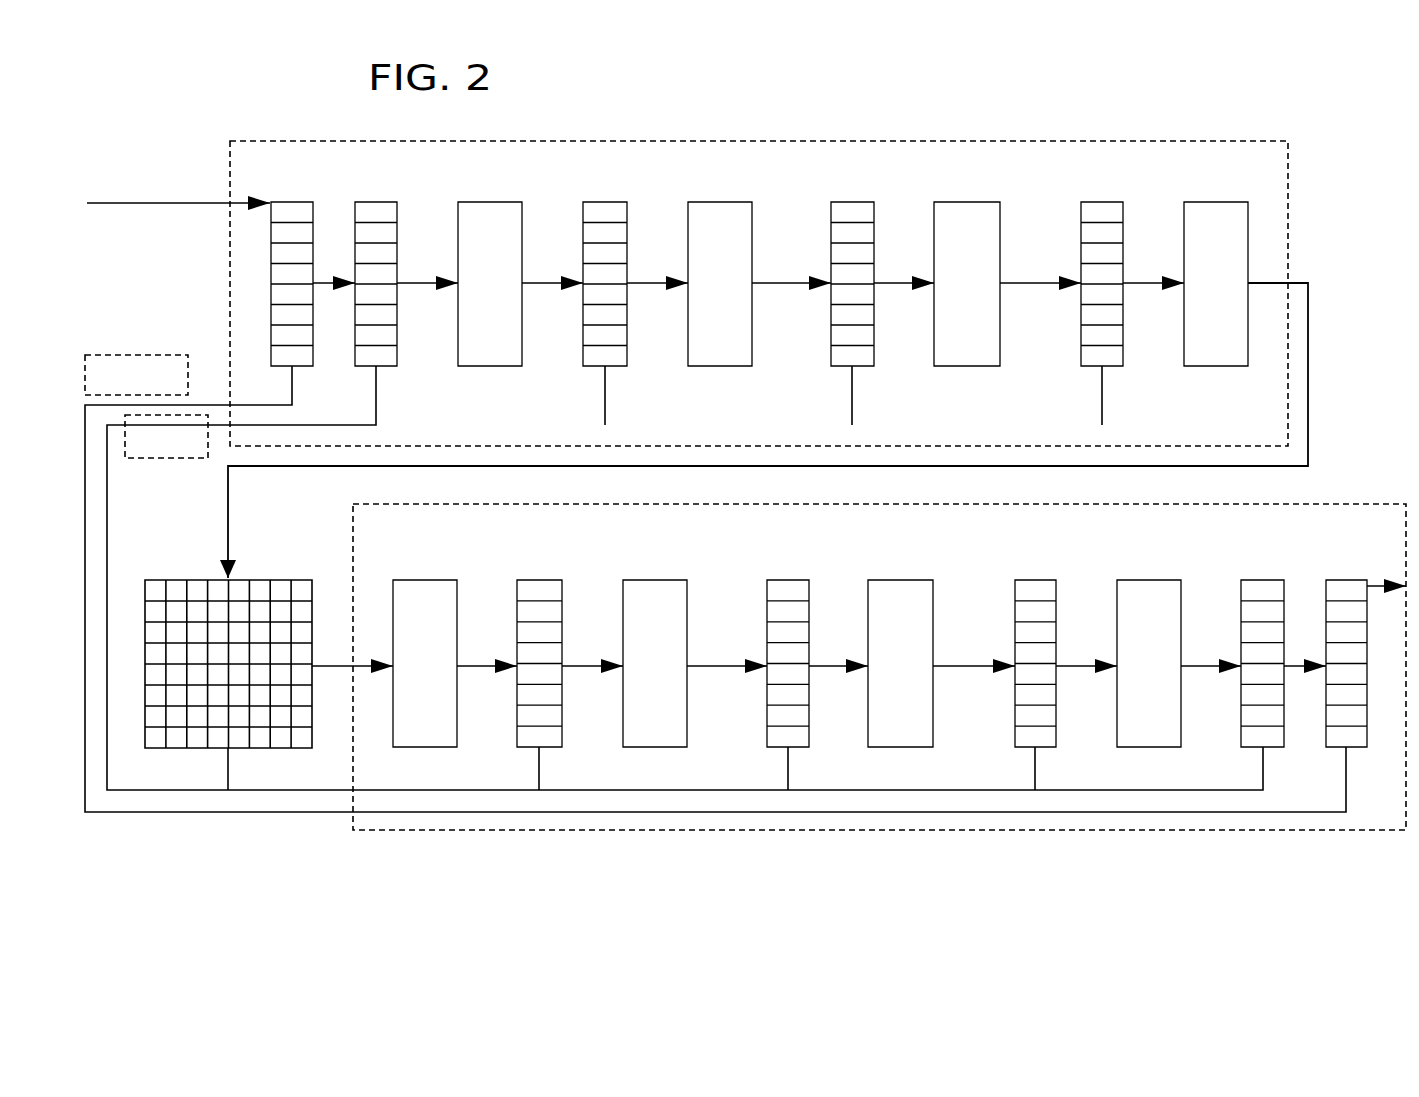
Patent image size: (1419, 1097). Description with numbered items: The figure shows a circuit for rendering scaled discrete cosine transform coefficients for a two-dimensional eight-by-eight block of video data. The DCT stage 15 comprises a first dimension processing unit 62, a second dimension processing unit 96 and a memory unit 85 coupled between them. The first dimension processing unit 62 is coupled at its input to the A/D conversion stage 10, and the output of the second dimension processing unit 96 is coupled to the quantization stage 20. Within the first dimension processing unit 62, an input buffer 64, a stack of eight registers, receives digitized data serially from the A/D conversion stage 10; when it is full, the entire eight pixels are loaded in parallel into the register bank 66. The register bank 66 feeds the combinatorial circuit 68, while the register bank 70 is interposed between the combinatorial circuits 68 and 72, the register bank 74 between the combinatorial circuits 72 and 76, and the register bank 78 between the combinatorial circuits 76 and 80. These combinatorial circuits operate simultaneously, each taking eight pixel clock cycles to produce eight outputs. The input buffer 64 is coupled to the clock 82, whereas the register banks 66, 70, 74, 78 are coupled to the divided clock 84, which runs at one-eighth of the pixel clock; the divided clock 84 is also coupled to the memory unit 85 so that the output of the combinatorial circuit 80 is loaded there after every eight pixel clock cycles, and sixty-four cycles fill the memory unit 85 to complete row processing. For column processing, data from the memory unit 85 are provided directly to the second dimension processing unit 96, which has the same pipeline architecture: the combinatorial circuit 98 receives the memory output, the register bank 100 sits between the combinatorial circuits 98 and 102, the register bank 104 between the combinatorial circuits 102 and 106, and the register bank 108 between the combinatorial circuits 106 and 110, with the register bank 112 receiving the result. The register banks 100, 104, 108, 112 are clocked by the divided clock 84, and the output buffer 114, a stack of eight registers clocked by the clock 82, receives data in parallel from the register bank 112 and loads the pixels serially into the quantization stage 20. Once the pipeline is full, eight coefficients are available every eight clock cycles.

The A/D conversion stage 10 is at (174, 137).
The DCT stage 15 is at (1186, 65).
The quantization stage 20 is at (1369, 470).
The first dimension processing unit 62 is at (1178, 141).
The input buffer 64 is at (300, 366).
The register bank 66 is at (385, 366).
The combinatorial circuit 68 is at (481, 202).
The register bank 70 is at (612, 366).
The combinatorial circuit 72 is at (714, 202).
The register bank 74 is at (861, 366).
The combinatorial circuit 76 is at (976, 202).
The register bank 78 is at (1110, 366).
The combinatorial circuit 80 is at (1224, 202).
The clock 82 is at (125, 355).
The 1/n clock 84 is at (142, 458).
The memory unit 85 is at (188, 580).
The second dimension processing unit 96 is at (1258, 830).
The combinatorial circuit 98 is at (418, 580).
The register bank 100 is at (548, 747).
The combinatorial circuit 102 is at (648, 580).
The register bank 104 is at (794, 747).
The combinatorial circuit 106 is at (893, 580).
The register bank 108 is at (1044, 747).
The combinatorial circuit 110 is at (1122, 580).
The register bank 112 is at (1270, 747).
The output buffer 114 is at (1352, 747).